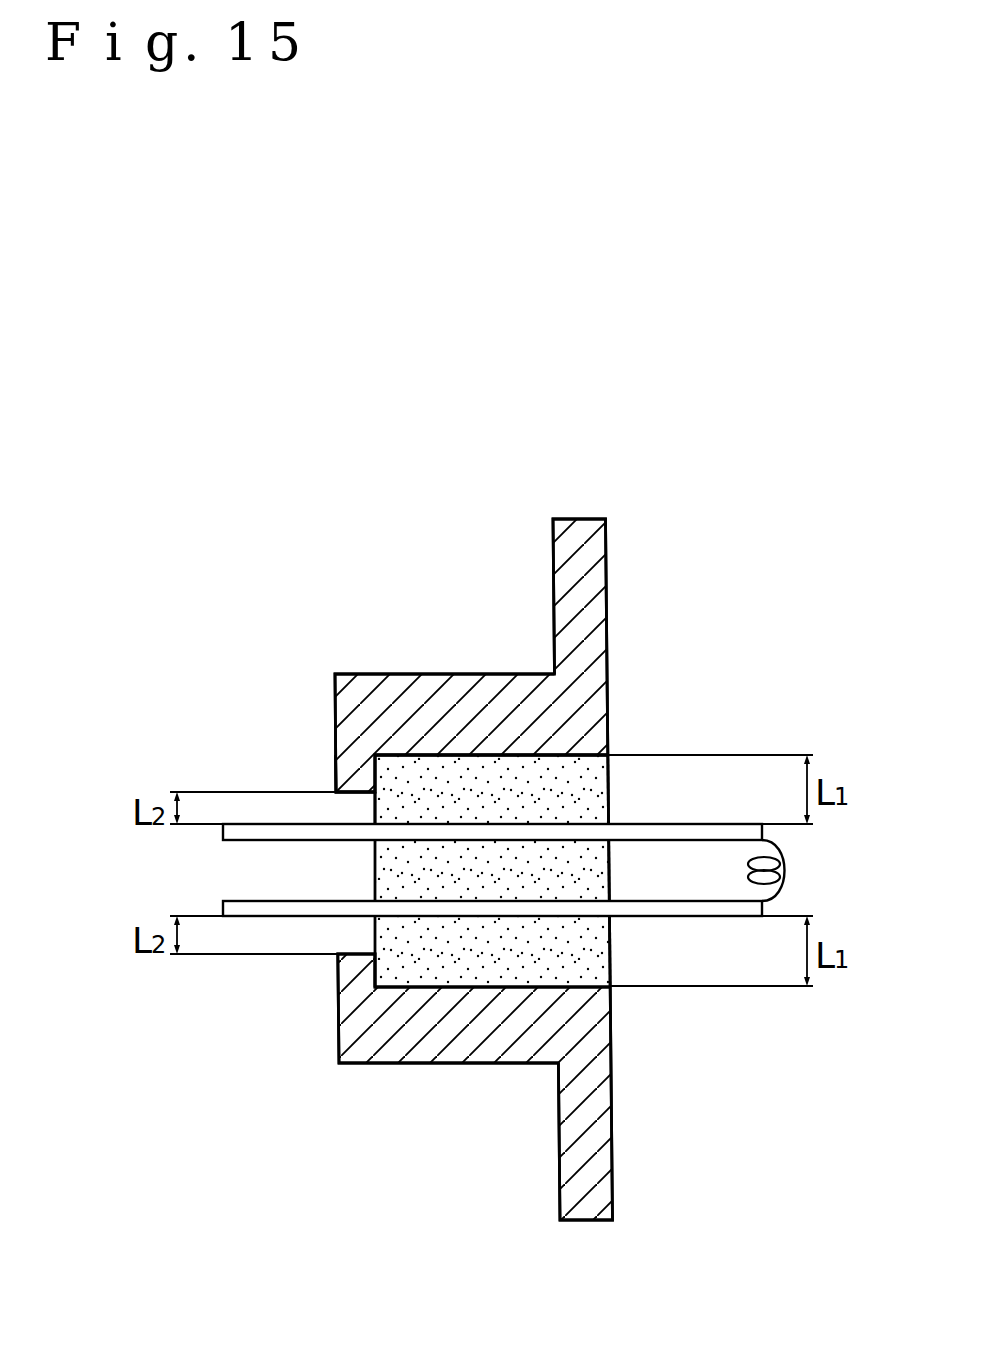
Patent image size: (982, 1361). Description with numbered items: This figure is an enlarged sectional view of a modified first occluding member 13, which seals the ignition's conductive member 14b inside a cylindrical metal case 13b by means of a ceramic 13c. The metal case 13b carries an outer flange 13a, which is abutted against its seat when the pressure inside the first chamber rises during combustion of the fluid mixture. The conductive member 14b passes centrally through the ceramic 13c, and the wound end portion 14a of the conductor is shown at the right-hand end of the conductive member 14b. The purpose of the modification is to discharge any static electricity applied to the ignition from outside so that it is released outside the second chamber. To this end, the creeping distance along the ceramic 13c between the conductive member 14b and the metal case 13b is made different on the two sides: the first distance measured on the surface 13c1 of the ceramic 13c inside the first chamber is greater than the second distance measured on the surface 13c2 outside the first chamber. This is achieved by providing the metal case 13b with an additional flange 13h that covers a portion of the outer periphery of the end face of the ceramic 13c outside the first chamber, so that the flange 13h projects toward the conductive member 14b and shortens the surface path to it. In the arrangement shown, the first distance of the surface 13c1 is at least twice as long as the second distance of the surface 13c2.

The first occluding member 13 is at (580, 488).
The flange 13a is at (595, 608).
The cylindrical metal case 13b is at (463, 682).
The ceramic 13c is at (585, 952).
The surface of the ceramic inside the first chamber 13c1 is at (612, 787).
The surface of the ceramic outside the first chamber 13c2 is at (373, 813).
The flange 13h is at (347, 766).
The coil (wound portion) of wire 14a is at (785, 855).
The conductive member 14b is at (225, 833).